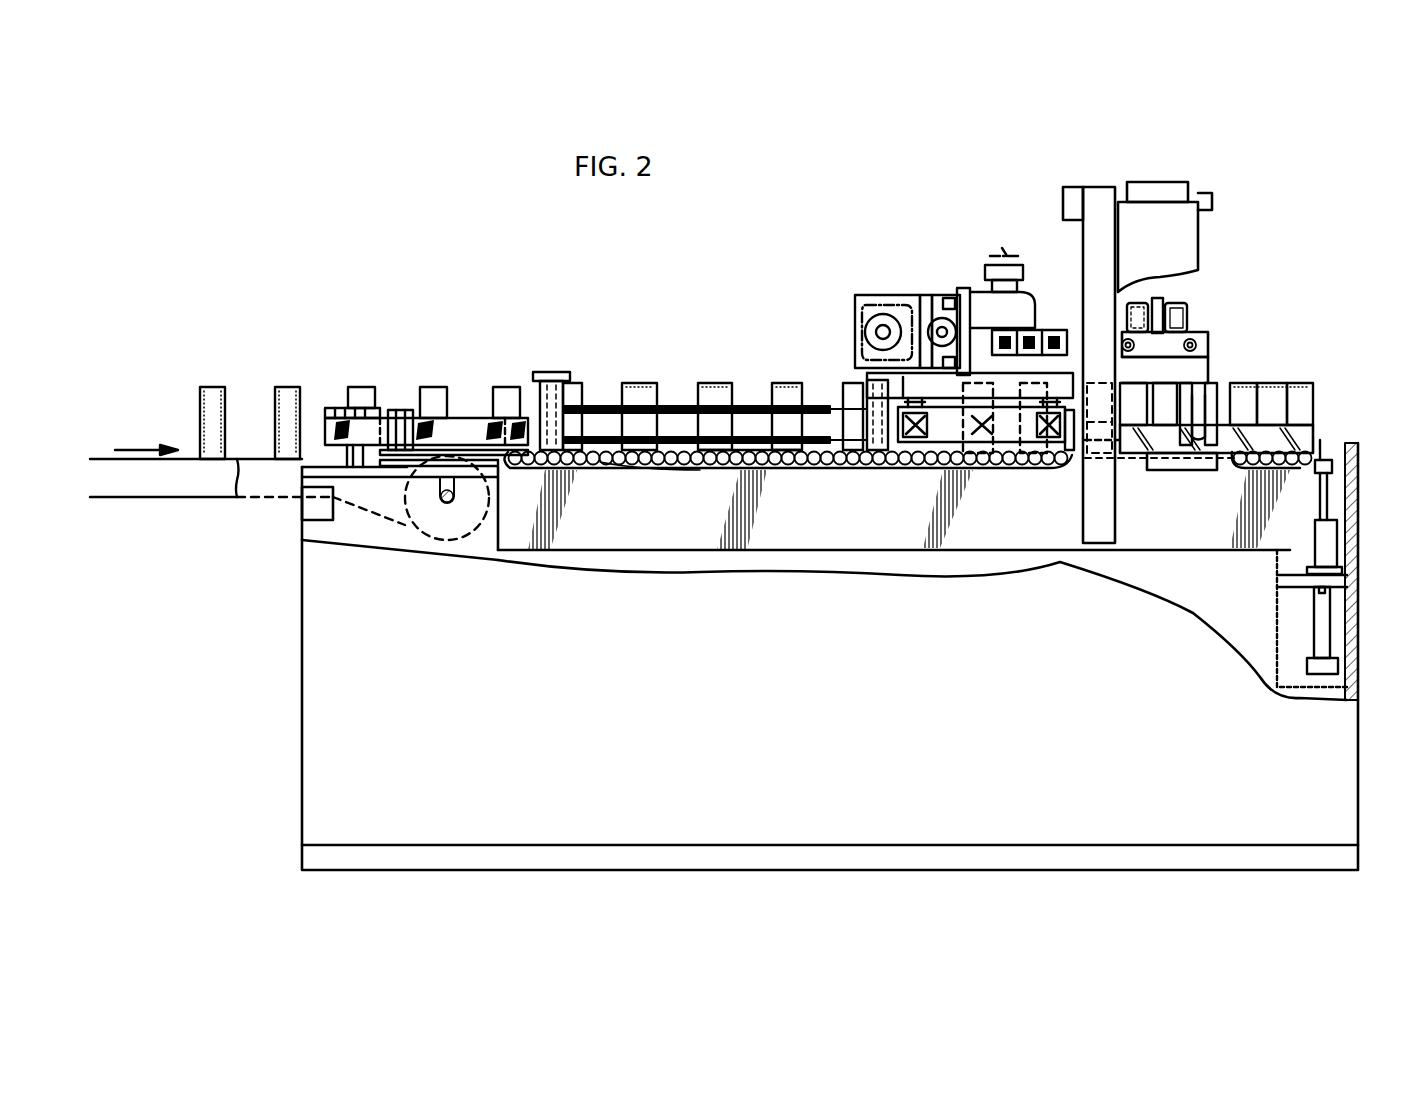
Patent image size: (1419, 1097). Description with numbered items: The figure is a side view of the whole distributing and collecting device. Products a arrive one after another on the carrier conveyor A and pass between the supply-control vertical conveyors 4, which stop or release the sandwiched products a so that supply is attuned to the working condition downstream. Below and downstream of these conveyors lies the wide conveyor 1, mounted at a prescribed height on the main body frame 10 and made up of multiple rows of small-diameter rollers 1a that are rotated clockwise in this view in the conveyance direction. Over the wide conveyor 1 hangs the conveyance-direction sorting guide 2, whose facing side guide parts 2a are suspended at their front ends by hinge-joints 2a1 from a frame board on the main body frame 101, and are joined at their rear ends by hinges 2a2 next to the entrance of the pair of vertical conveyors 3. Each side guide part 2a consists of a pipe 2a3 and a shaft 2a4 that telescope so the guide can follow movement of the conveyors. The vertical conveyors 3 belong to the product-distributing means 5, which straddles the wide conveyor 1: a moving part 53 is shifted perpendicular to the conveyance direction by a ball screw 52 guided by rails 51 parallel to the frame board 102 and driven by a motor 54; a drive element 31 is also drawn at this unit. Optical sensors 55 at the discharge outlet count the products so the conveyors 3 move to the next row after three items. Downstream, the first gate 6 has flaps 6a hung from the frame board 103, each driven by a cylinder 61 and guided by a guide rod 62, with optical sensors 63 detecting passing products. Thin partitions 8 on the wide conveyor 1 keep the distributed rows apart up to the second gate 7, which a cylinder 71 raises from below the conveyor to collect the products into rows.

The carrier conveyor A is at (102, 458).
The product a is at (212, 385).
The wide conveyor 1 is at (680, 465).
The small-diameter roller 1a is at (640, 466).
The conveyance-direction sorting guide 2 is at (678, 418).
The side guide part 2a is at (742, 420).
The hinge-joint 2a1 is at (574, 392).
The hinge 2a2 is at (892, 463).
The pipe 2a3 is at (795, 463).
The shaft 2a4 is at (843, 463).
The vertical conveyor 3 is at (1010, 445).
The transfer unit drive 31 is at (1012, 270).
The vertical conveyor 4 is at (466, 418).
The product-distributing means 5 is at (1045, 326).
The rail 51 is at (1000, 368).
The ball screw 52 is at (956, 334).
The moving part 53 is at (963, 288).
The motor 54 is at (870, 326).
The optical sensor 55 is at (1072, 452).
The first gate 6 is at (1212, 352).
The cylinder 61 is at (1210, 288).
The guide rod 62 is at (1185, 352).
The optical sensor 63 is at (1185, 447).
The flap 6a is at (1200, 447).
The second gate 7 is at (1327, 440).
The cylinder 71 is at (1330, 620).
The thin partition 8 is at (1143, 452).
The main body frame 10 is at (545, 647).
The main body frame 101 is at (552, 380).
The frame board 102 is at (928, 305).
The frame board 103 is at (1078, 188).